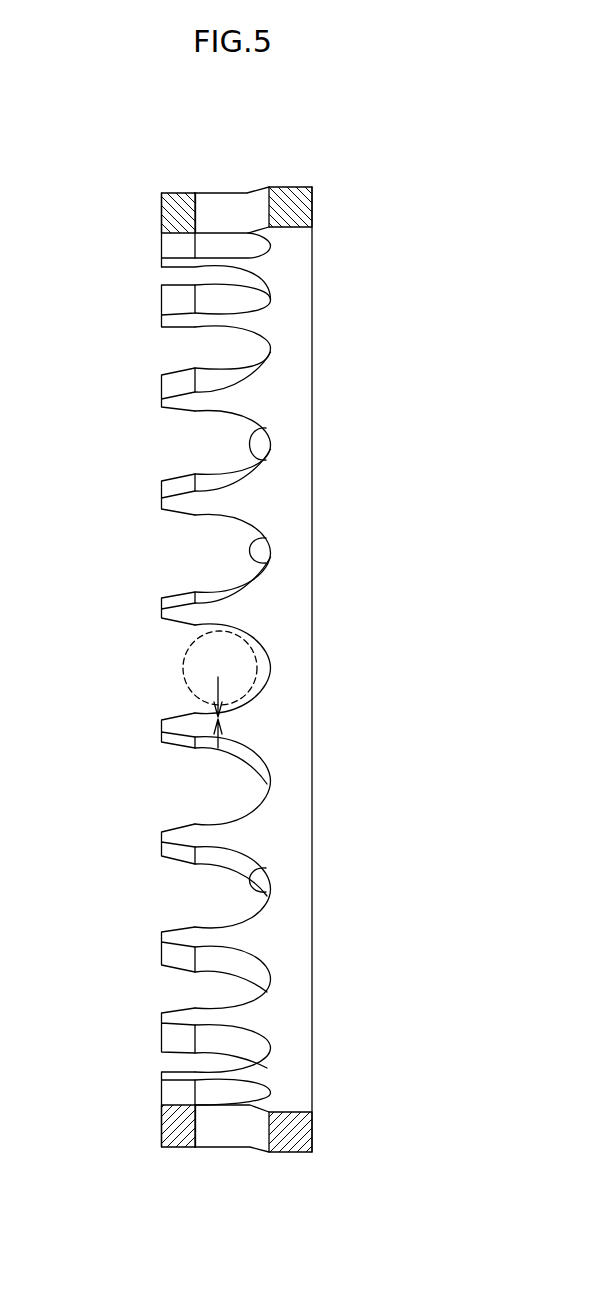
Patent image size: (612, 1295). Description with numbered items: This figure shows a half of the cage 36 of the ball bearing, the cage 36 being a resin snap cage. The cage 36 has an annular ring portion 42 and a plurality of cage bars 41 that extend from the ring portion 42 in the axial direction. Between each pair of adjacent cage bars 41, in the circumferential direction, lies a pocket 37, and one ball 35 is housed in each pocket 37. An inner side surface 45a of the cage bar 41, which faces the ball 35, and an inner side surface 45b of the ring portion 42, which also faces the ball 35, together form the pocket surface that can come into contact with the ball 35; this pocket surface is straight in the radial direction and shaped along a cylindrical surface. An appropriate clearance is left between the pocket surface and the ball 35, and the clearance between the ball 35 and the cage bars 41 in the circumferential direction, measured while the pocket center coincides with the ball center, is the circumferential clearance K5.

The cage 36 is at (300, 186).
The ring portion 42 is at (300, 471).
The cage bar 41 is at (162, 498).
The pocket 37 is at (154, 561).
The inner side surface of the cage bar 45a is at (228, 483).
The inner side surface of the ring portion 45b is at (264, 426).
The ball 35 is at (188, 651).
The circumferential clearance K5 is at (228, 706).